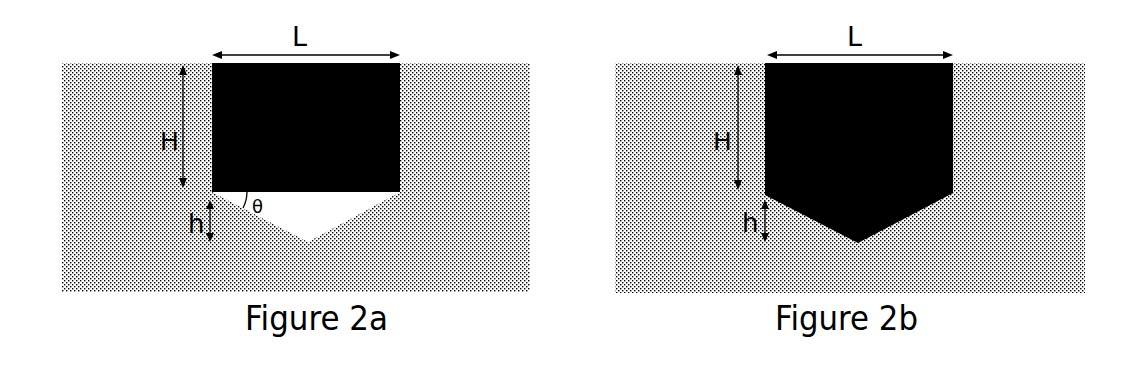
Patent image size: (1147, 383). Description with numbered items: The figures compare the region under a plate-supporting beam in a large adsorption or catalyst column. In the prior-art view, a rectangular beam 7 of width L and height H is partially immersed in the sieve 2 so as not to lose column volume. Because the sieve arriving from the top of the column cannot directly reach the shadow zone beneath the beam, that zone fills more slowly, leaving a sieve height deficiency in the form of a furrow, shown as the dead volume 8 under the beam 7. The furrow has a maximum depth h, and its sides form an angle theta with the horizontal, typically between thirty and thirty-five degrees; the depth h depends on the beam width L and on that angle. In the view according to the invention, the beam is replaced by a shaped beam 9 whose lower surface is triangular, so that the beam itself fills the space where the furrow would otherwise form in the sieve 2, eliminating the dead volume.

In FIG. 2A, the sieve 2 is at (437, 93).
In FIG. 2A, the beam 7 is at (405, 139).
In FIG. 2A, the dead volume 8 is at (345, 222).
In FIG. 2B, the shaped beam 9 is at (890, 226).